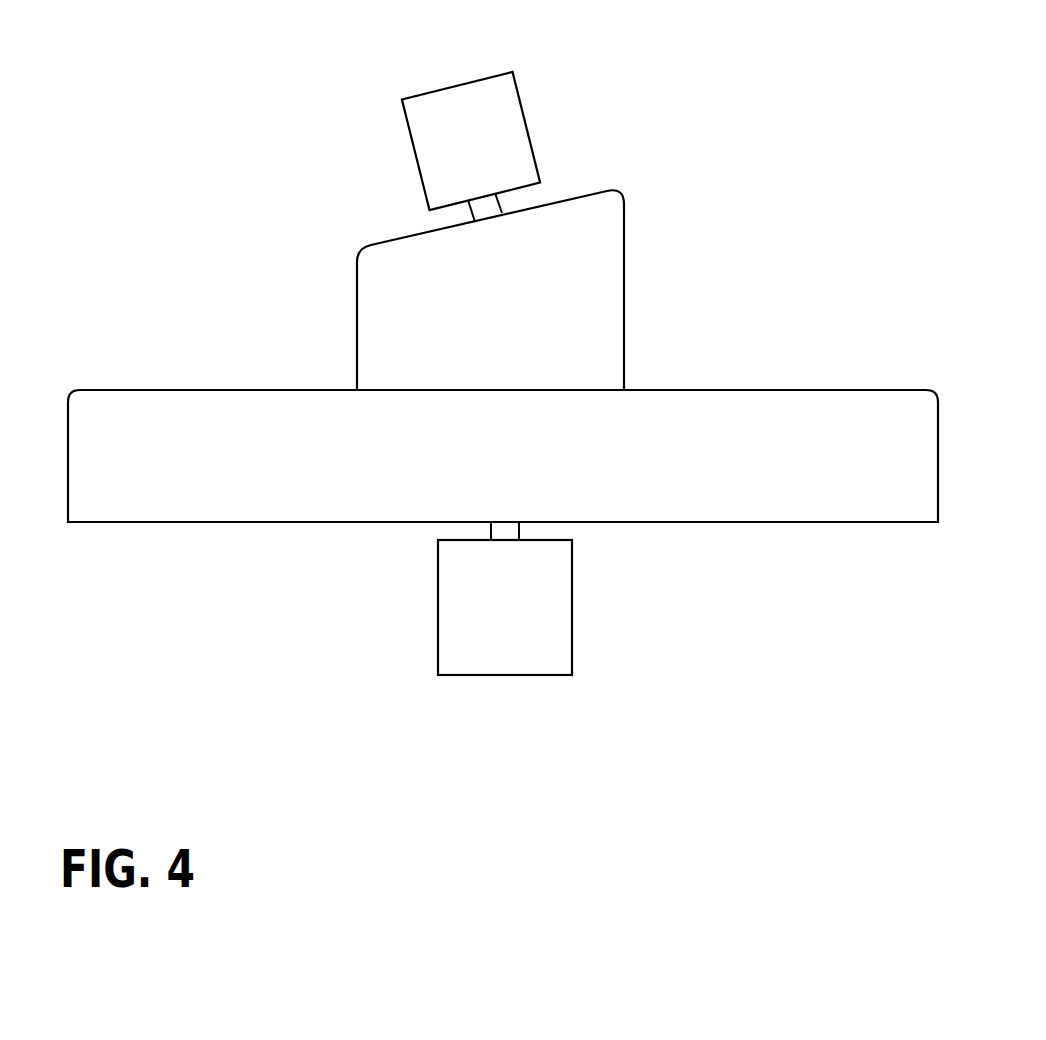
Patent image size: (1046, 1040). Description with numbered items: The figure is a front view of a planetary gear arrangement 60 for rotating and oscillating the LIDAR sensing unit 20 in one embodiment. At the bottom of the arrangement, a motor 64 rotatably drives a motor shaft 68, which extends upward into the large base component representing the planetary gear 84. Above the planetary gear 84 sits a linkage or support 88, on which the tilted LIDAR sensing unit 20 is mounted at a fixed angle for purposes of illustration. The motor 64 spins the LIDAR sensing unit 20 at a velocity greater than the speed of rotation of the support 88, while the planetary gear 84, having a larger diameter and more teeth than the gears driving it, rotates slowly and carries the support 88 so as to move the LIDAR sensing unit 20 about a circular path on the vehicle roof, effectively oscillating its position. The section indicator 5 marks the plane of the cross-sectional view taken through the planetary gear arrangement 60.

The LIDAR sensing unit 20 is at (518, 103).
The support 88 is at (355, 312).
The planetary gear 84 is at (92, 388).
The motor shaft 68 is at (488, 530).
The motor 64 is at (573, 608).
The planetary gear arrangement 60 is at (259, 534).
The section line 5- 5 is at (862, 207).